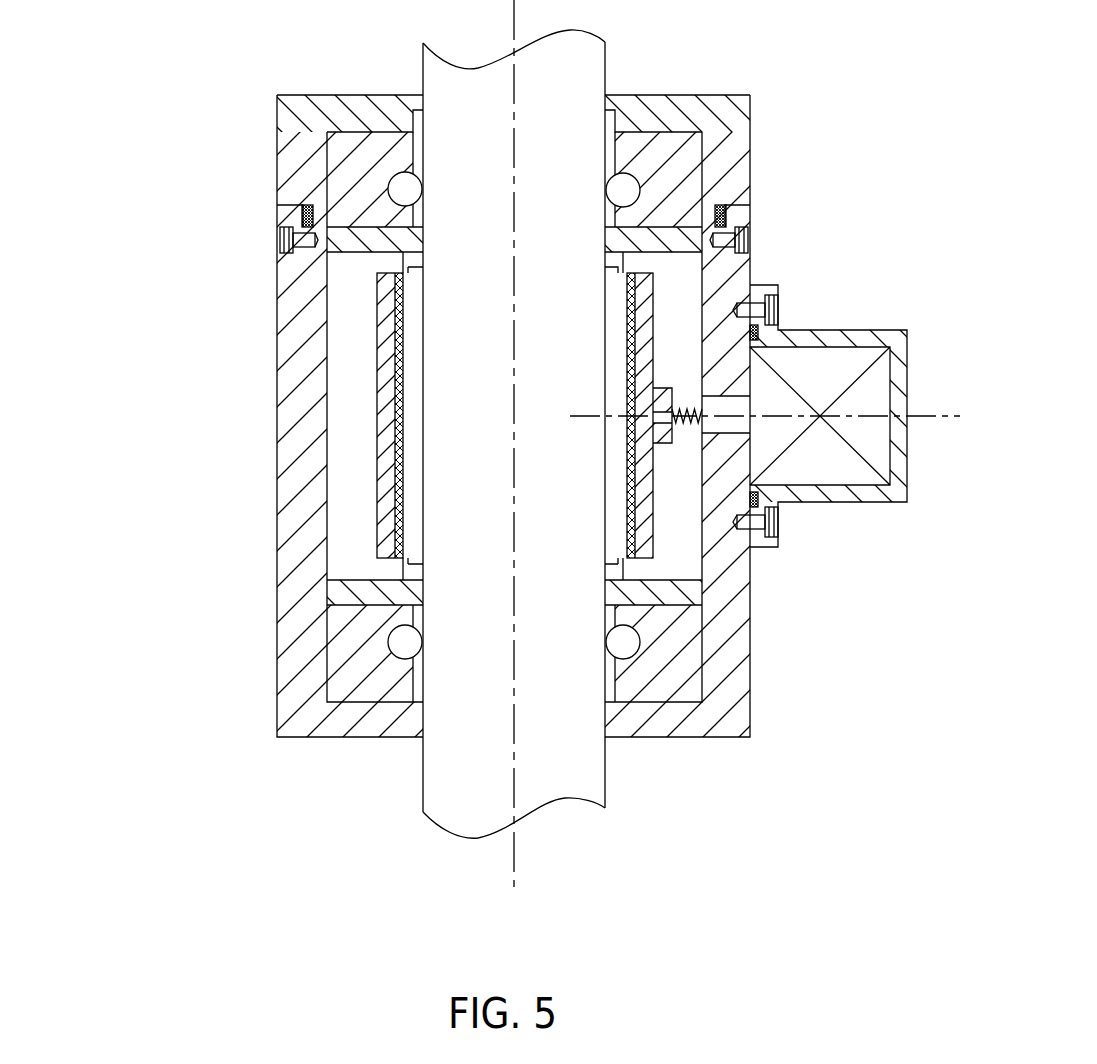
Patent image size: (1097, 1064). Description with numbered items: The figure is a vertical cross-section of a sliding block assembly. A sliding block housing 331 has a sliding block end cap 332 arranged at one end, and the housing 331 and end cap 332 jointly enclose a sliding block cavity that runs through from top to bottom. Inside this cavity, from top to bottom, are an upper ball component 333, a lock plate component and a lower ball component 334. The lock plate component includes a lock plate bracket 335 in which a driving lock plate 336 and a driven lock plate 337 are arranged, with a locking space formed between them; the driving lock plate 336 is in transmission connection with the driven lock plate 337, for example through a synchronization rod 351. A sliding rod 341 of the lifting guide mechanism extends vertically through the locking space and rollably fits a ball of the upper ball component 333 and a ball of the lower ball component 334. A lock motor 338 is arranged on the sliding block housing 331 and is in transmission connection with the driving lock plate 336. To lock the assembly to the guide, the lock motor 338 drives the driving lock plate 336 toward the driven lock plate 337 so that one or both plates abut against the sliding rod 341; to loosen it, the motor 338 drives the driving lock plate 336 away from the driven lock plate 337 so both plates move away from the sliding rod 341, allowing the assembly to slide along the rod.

The sliding block housing 331 is at (300, 430).
The sliding block end cap 332 is at (308, 131).
The upper ball component 333 is at (357, 178).
The lower ball component 334 is at (363, 652).
The lock plate bracket 335 is at (373, 592).
The driving lock plate 336 is at (645, 497).
The driven lock plate 337 is at (380, 470).
The lock motor 338 is at (820, 416).
The sliding rod 341 is at (557, 702).
The synchronization rod 351 is at (615, 262).